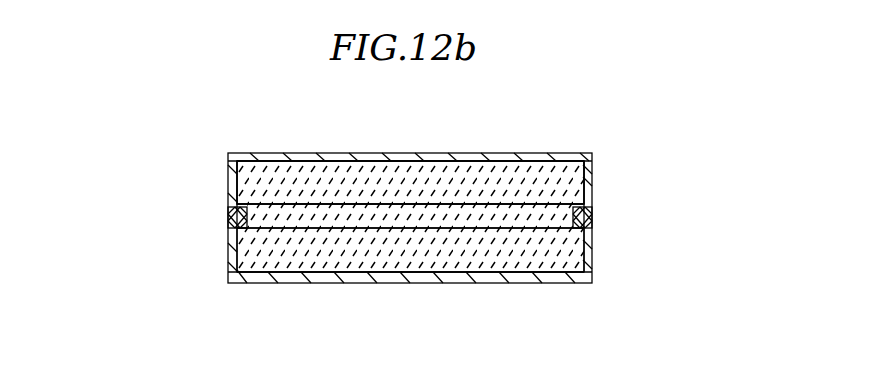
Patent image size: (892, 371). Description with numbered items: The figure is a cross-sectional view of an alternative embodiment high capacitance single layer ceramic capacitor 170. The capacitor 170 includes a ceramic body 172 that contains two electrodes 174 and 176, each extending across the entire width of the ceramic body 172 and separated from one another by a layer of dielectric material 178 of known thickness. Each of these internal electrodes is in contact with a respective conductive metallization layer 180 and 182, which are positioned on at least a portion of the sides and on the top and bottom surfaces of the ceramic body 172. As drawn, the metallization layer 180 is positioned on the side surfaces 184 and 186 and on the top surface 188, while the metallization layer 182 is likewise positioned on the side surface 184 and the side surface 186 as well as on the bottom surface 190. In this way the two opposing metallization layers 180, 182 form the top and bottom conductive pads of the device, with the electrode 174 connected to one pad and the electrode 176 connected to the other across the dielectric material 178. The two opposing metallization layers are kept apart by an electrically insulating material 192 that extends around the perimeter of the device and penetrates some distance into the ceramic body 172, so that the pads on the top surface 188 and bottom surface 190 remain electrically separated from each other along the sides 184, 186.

The high capacitance single layer ceramic capacitor 170 is at (260, 115).
The ceramic body 172 is at (433, 180).
The electrode 174 is at (330, 204).
The electrode 176 is at (292, 229).
The separator layer 178 is at (543, 215).
The conductive metallization layer 180 is at (586, 190).
The metallization layer 182 is at (593, 267).
The side surface 184 is at (233, 182).
The side surface 186 is at (586, 178).
The top surface 188 is at (547, 158).
The bottom surface 190 is at (535, 273).
The electrically insulating material 192 is at (228, 213).